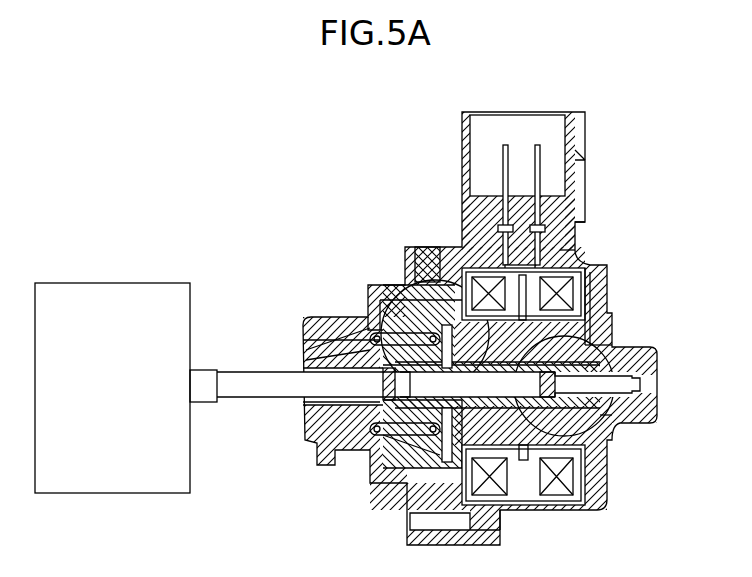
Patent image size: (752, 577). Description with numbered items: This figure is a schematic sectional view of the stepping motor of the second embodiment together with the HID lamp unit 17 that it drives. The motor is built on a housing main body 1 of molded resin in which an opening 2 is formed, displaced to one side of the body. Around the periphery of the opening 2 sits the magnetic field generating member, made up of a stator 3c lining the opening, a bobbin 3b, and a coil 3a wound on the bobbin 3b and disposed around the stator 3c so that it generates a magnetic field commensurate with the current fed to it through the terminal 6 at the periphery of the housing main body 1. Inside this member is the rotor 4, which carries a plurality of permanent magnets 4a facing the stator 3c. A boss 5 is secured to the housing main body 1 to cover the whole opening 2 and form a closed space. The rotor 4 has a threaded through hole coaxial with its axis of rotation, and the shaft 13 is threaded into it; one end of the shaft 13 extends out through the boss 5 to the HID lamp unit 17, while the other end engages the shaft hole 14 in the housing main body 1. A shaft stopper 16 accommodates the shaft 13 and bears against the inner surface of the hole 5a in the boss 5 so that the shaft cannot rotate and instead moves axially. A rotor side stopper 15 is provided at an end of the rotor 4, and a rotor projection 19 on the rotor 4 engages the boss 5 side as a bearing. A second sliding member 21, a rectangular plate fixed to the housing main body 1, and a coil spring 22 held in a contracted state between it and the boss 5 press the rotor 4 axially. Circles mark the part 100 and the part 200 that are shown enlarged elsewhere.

The housing main body 1 is at (658, 380).
The opening 2 is at (578, 343).
The coil 3a is at (598, 282).
The bobbin 3b is at (578, 470).
The stator 3c is at (593, 298).
The rotor 4 is at (400, 285).
The permanent magnets 4a is at (560, 248).
The boss 5 is at (355, 305).
The hole 5a is at (300, 402).
The terminal 6 is at (538, 145).
The shaft 13 is at (265, 383).
The shaft hole 14 is at (645, 385).
The rotor side stopper 15 is at (370, 410).
The shaft stopper 16 is at (300, 338).
The HID lamp unit 17 is at (147, 283).
The rotor projection 19 is at (372, 432).
The second sliding member 21 is at (427, 250).
The coil spring 22 is at (367, 308).
The part of the stepping motor 100 is at (605, 416).
The part of the stepping motor 200 is at (415, 250).